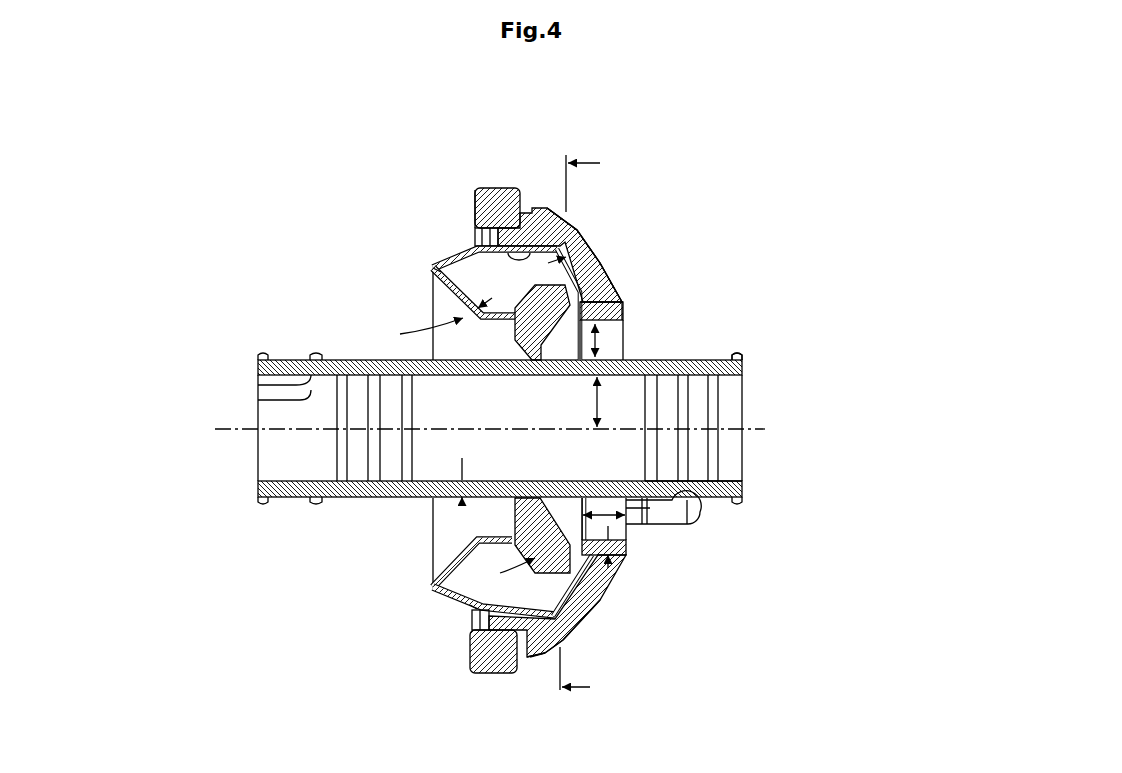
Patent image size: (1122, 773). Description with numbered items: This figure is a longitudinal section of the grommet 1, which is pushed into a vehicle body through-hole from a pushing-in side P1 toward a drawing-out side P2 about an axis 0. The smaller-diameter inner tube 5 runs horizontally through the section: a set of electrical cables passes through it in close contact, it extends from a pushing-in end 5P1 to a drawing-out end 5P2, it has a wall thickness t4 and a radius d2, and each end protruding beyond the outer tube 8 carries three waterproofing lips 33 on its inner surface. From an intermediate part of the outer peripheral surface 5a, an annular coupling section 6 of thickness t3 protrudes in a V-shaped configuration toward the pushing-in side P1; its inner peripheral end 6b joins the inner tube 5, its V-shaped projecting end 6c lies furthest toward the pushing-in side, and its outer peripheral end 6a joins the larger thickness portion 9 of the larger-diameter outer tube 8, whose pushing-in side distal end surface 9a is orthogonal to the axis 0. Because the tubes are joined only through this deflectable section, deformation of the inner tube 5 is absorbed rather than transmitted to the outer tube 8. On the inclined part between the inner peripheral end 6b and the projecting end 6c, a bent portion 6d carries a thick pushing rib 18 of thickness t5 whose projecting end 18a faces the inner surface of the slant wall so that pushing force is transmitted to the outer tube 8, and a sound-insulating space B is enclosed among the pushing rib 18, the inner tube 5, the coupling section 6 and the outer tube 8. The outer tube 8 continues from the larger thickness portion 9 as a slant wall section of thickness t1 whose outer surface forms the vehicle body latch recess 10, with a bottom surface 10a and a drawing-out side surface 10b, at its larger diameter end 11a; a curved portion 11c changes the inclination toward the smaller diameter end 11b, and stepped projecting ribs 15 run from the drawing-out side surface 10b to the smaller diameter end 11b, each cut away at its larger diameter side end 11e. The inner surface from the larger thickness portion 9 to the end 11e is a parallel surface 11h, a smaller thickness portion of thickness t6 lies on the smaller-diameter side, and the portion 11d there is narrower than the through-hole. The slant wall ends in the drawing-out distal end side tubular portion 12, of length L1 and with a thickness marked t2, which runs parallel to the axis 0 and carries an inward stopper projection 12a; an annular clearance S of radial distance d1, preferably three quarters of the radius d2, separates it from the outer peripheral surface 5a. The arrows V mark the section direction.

The grommet 1 is at (303, 150).
The inner tube 5 is at (535, 407).
The pushing-in end 5P1 is at (284, 360).
The drawing-out end 5P2 is at (737, 358).
The outer peripheral surface 5a is at (693, 484).
The annular coupling section 6 is at (448, 418).
The outer peripheral end 6a is at (474, 244).
The inner peripheral end 6b is at (522, 358).
The V-shaped projecting end 6c is at (430, 587).
The bent portion 6d is at (510, 540).
The outer tube 8 is at (618, 369).
The larger thickness portion 9 is at (468, 172).
The pushing-in side distal end surface 9a is at (475, 202).
The vehicle body latch recess 10 is at (572, 285).
The bottom surface 10a is at (470, 650).
The drawing-out side surface 10b is at (548, 655).
The larger diameter end 11a is at (525, 650).
The smaller diameter end 11b is at (604, 580).
The curved portion 11c is at (563, 640).
The smaller diameter side portion 11d is at (628, 303).
The larger diameter side end 11e is at (563, 215).
The parallel surface 11h is at (510, 223).
The drawing-out distal end side tubular portion 12 is at (630, 312).
The stopper projection 12a is at (588, 605).
The projecting ribs 15 is at (618, 298).
The pushing rib 18 is at (568, 236).
The projecting end 18a is at (598, 273).
The waterproofing lips 33 is at (686, 397).
The axis 0 is at (765, 427).
The sound-insulating space B is at (493, 271).
The annular clearance S is at (685, 513).
The view direction V is at (580, 427).
The radial distance d1 is at (598, 336).
The radius d2 is at (609, 402).
The length L1 is at (650, 526).
The thickness of slant wall section t1 is at (575, 243).
The thickness t2 is at (627, 548).
The thickness of annular coupling section t3 is at (435, 319).
The thickness of inner tube t4 is at (468, 476).
The thickness of pushing rib t5 is at (506, 572).
The thickness of smaller thickness portion t6 is at (477, 605).
The pushing-in side P1 is at (229, 275).
The drawing-out side P2 is at (804, 275).